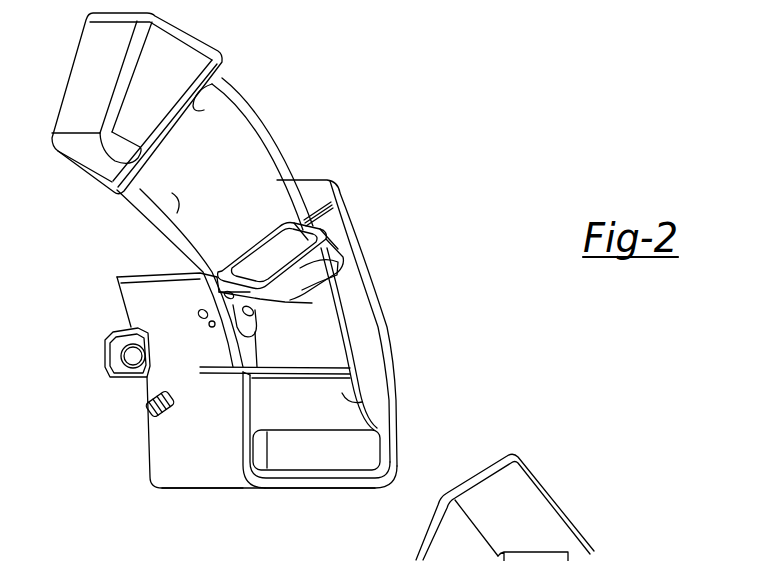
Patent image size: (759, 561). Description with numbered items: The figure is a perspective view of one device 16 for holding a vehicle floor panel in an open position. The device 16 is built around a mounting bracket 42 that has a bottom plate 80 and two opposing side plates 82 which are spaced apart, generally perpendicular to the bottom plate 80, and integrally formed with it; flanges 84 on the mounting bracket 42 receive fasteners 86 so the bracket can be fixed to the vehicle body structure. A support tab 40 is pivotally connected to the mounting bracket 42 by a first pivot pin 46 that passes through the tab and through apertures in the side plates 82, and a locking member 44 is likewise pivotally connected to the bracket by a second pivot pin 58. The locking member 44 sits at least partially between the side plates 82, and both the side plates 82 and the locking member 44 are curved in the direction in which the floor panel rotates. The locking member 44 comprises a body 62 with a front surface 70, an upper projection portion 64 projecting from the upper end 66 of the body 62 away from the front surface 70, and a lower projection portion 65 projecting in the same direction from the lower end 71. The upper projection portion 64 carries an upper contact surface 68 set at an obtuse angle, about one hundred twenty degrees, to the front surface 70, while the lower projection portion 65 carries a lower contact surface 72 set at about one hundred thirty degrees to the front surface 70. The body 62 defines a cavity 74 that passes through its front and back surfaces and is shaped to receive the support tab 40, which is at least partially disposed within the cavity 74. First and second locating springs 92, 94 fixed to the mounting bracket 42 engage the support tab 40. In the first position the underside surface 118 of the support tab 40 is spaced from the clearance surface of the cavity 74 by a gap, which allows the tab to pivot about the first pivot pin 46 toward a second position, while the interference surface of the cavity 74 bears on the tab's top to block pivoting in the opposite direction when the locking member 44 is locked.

The device 16 is at (409, 92).
The support tab 40 is at (332, 248).
The mounting bracket 42 is at (127, 285).
The locking member 44 is at (217, 143).
The first pivot pin 46 is at (199, 308).
The second pivot pin 58 is at (150, 407).
The body 62 is at (285, 162).
The upper projection portion 64 is at (178, 64).
The lower projection portion 65 is at (338, 453).
The upper end 66 is at (107, 183).
The upper contact surface 68 is at (203, 110).
The front surface 70 is at (173, 197).
The lower end 71 is at (243, 370).
The lower contact surface 72 is at (394, 405).
The cavity 74 is at (220, 292).
The bottom plate 80 is at (284, 488).
The opposing side plates 82 is at (392, 409).
The flanges 84 is at (128, 377).
The fasteners 86 is at (137, 353).
The first locating spring 92 is at (318, 198).
The second locating spring 94 is at (258, 366).
The underside surface 118 is at (333, 278).